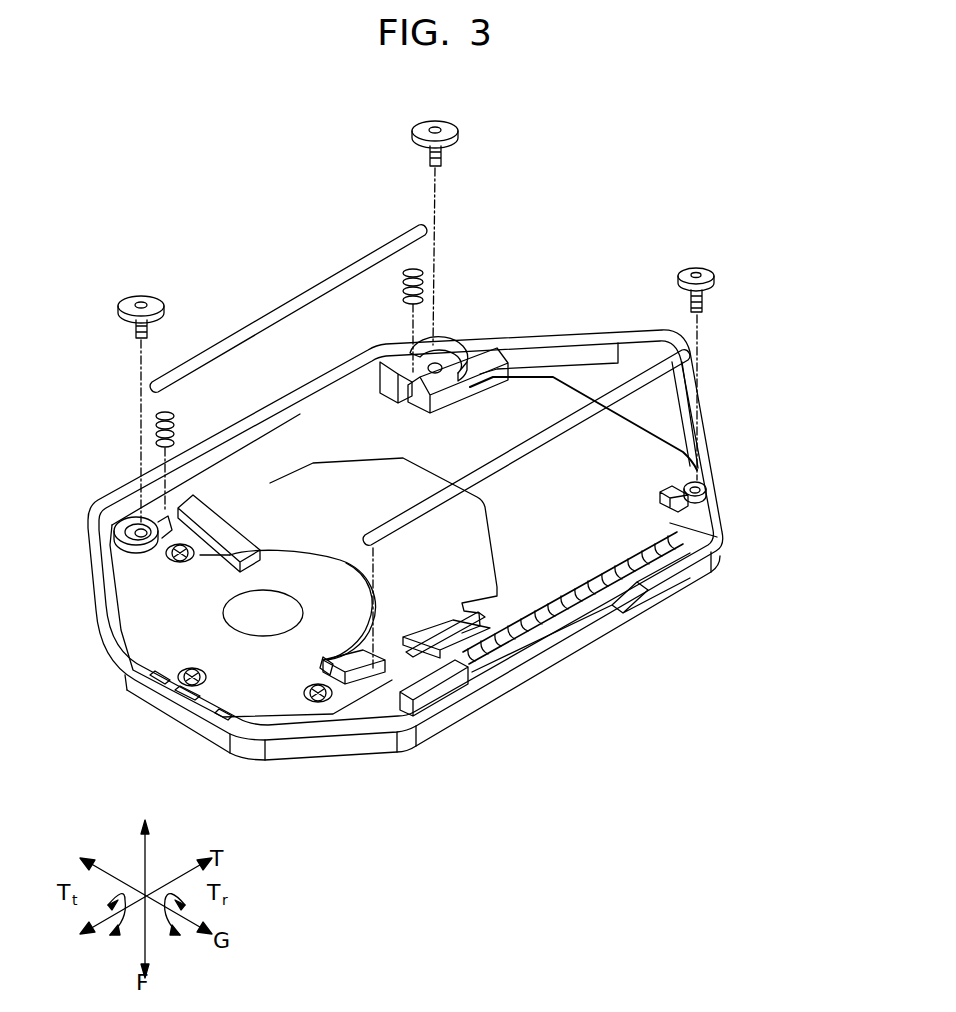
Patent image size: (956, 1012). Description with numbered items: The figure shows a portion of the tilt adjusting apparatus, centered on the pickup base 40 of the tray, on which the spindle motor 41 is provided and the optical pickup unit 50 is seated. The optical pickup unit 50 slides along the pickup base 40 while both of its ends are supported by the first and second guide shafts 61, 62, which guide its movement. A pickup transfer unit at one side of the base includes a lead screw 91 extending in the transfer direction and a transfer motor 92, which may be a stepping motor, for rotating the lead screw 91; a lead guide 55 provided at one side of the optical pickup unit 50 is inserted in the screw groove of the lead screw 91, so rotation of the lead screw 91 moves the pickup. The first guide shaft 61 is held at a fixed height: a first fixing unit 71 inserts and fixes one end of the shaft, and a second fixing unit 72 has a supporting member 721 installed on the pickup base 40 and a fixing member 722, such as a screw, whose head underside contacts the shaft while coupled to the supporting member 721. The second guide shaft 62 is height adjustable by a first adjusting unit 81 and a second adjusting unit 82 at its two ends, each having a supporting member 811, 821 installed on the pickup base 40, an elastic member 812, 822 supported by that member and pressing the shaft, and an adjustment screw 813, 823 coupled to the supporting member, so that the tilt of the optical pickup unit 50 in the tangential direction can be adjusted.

The pickup base 40 is at (585, 326).
The spindle motor 41 is at (222, 692).
The optical pickup unit 50 is at (422, 454).
The lead guide 55 is at (486, 661).
The first guide shaft 61 is at (530, 449).
The second guide shaft 62 is at (272, 312).
The first fixing unit 71 is at (358, 680).
The second fixing unit 72 is at (736, 402).
The supporting member 721 is at (714, 482).
The fixing member 722 is at (712, 287).
The first adjusting unit 81 is at (103, 424).
The supporting member 811 is at (122, 503).
The elastic member 812 is at (155, 430).
The adjustment screw 813 is at (122, 324).
The second adjusting unit 82 is at (473, 251).
The supporting member 821 is at (455, 331).
The elastic member 822 is at (423, 284).
The adjustment screw 823 is at (446, 148).
The lead screw 91 is at (536, 632).
The transfer motor 92 is at (440, 690).